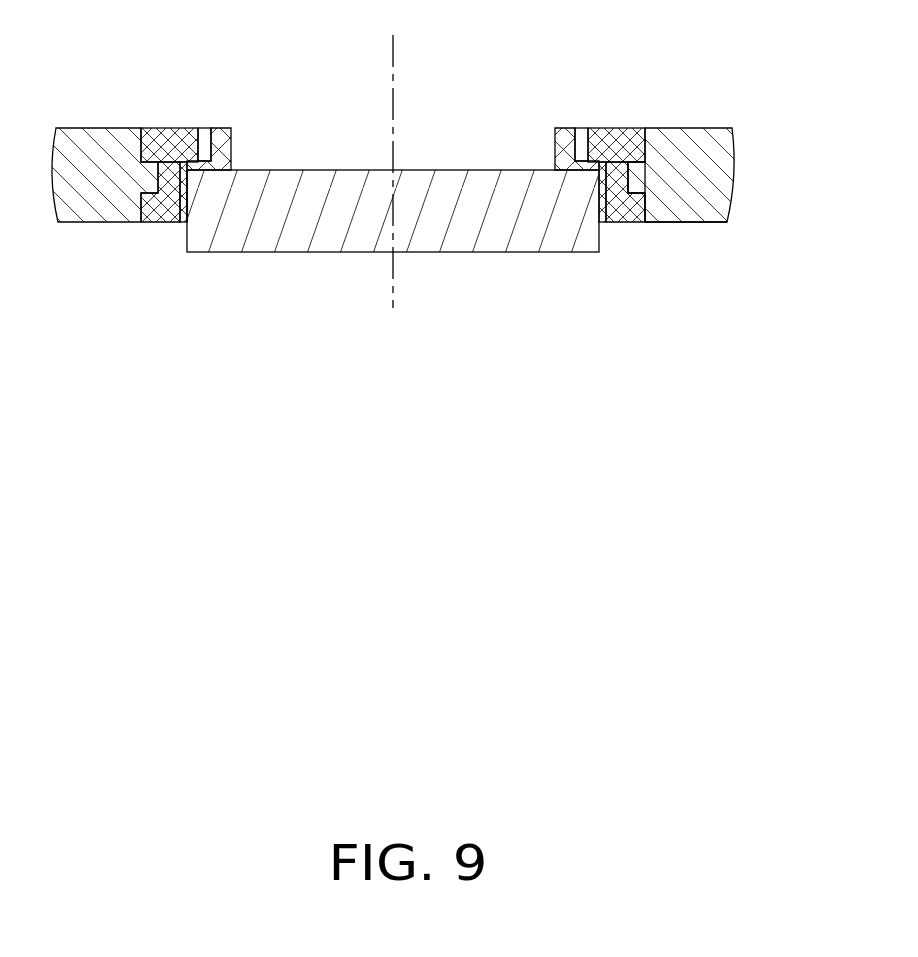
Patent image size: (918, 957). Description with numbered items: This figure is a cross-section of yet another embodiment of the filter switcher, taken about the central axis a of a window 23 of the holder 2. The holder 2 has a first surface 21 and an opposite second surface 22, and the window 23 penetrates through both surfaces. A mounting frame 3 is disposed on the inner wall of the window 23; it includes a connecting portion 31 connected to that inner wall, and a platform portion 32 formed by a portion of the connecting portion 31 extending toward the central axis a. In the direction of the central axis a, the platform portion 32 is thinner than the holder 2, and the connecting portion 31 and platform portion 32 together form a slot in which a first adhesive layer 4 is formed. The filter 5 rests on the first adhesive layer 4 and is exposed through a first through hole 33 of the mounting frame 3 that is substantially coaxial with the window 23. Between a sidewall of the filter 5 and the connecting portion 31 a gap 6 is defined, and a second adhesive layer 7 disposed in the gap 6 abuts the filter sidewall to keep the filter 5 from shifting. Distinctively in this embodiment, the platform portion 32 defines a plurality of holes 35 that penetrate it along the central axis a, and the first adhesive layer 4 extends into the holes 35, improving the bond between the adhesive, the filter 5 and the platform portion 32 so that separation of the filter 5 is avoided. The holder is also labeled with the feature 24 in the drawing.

The holder 2 is at (738, 162).
The first surface 21 is at (698, 222).
The second surface 22 is at (718, 128).
The window 23 is at (647, 206).
The protrusion 24 is at (635, 182).
The mounting frame 3 is at (588, 122).
The connecting portion 31 is at (620, 168).
The platform portion 32 is at (598, 150).
The first through hole 33 is at (563, 143).
The hole 35 is at (585, 116).
The first adhesive layer 4 is at (207, 143).
The filter 5 is at (478, 232).
The gap 6 is at (187, 213).
The second adhesive layer 7 is at (182, 205).
The central axis a is at (394, 57).